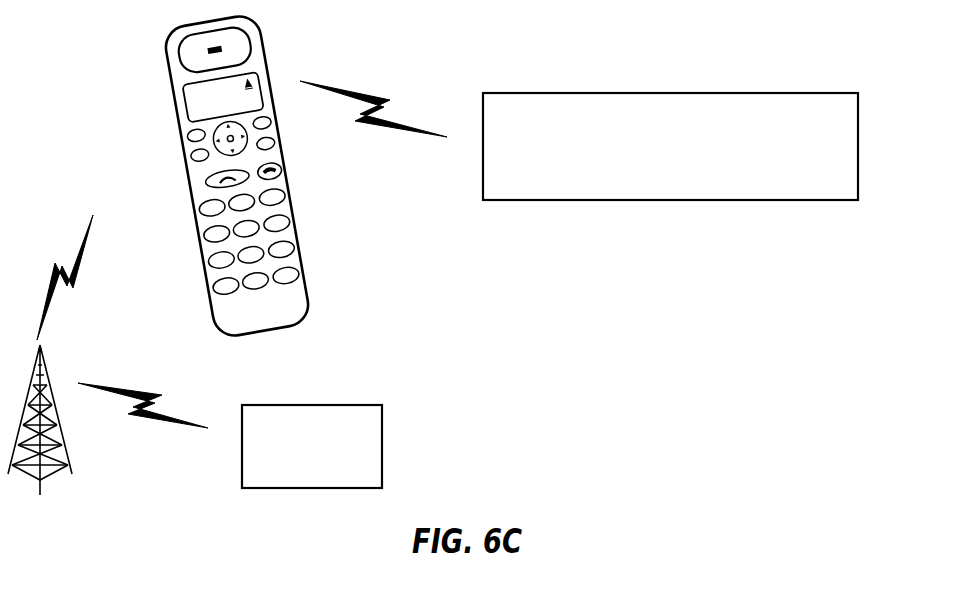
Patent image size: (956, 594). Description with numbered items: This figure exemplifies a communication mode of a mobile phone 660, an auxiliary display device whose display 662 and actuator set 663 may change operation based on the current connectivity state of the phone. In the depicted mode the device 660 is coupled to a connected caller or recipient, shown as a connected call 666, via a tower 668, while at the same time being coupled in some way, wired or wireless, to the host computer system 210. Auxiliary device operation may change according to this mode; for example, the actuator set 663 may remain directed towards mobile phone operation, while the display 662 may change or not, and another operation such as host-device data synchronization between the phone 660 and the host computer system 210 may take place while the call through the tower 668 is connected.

The mobile phone 660 is at (182, 54).
The display 662 is at (182, 94).
The actuator set 663 is at (180, 141).
The connected call indication 666 is at (362, 470).
The tower 668 is at (58, 425).
The host computer system 210 is at (510, 185).